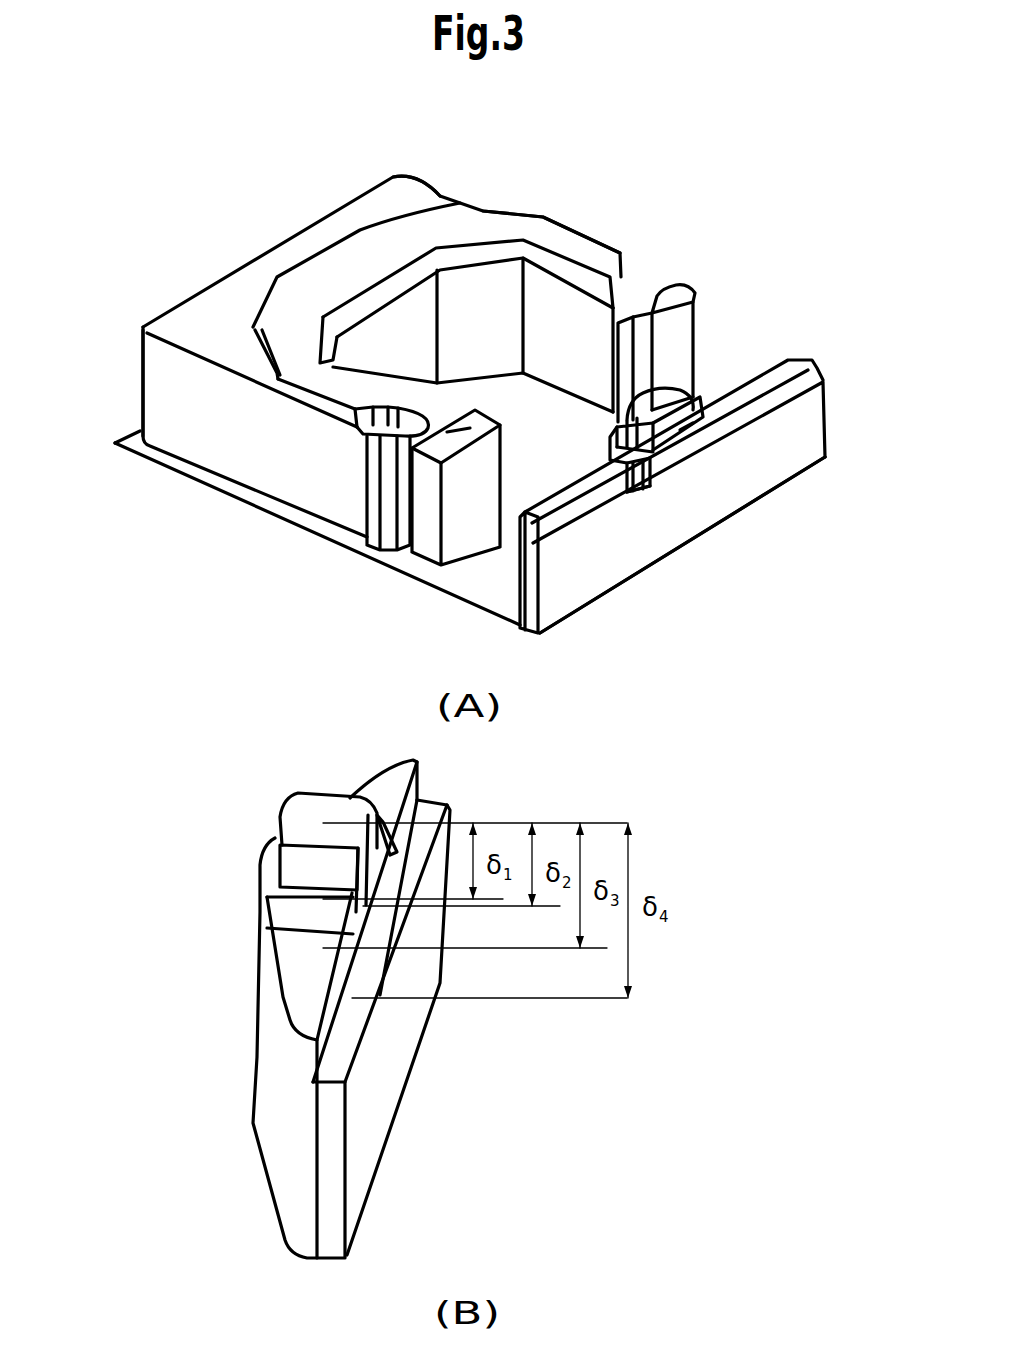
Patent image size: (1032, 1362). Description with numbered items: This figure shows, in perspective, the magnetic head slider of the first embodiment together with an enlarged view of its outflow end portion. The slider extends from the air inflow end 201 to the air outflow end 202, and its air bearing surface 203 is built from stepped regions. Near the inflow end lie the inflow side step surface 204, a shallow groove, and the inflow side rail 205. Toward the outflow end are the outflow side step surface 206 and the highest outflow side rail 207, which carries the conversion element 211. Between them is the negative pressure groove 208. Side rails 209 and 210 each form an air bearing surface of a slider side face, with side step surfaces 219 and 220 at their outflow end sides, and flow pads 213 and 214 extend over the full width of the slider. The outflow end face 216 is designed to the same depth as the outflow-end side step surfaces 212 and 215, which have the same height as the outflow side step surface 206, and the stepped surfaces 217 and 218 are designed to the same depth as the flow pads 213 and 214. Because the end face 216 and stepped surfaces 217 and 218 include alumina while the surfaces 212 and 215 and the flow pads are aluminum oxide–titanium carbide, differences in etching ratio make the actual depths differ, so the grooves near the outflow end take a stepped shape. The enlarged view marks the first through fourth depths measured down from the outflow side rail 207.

The air inflow end 201 is at (254, 249).
The air outflow end 202 is at (690, 483).
The air bearing surface 203 is at (141, 335).
The inflow side step surface 204 is at (335, 222).
The inflow side rail 205 is at (387, 237).
The outflow side step surface 206 is at (677, 397).
The outflow side rail 207 is at (666, 398).
The negative pressure groove 208 is at (527, 420).
The side rail 209 is at (653, 390).
The side rail 210 is at (341, 541).
The conversion element 211 is at (685, 392).
The outflow-end side step surface 212 is at (705, 412).
The flow pad 213 is at (790, 365).
The flow pad 214 is at (470, 568).
The outflow-end side step surface 215 is at (640, 487).
The outflow end face 216 is at (688, 447).
The stepped surface 217 is at (597, 510).
The stepped surface 218 is at (826, 378).
The side step surface 219 is at (593, 238).
The side step surface 220 is at (413, 440).